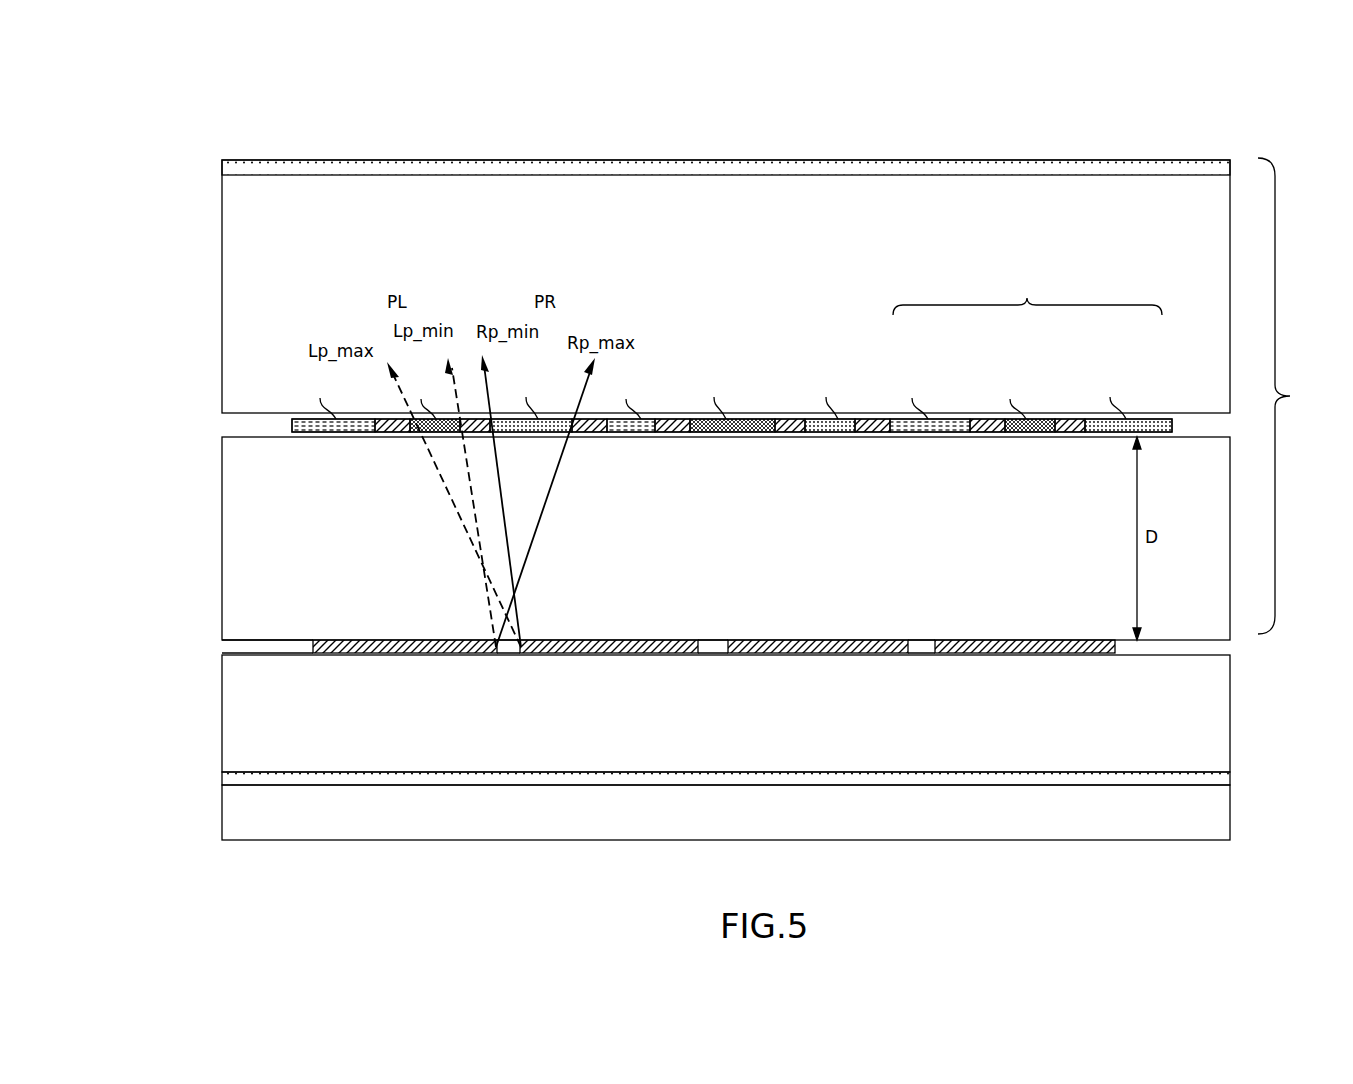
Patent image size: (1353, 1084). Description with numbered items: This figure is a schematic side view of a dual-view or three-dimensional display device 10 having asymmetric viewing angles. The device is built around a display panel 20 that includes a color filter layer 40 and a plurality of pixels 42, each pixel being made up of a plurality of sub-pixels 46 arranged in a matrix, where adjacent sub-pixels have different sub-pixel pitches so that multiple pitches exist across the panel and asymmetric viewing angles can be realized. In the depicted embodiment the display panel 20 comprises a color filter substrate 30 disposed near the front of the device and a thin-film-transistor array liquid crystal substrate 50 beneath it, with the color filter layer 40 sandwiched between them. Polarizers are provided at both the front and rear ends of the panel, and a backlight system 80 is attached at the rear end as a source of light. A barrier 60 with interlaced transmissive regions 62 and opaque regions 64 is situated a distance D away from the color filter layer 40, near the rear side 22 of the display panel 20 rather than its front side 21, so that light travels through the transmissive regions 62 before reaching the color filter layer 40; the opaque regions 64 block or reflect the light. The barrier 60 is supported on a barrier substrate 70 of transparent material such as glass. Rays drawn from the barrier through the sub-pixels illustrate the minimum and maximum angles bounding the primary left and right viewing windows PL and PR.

The dual-view/3D display device 10 is at (127, 111).
The display panel 20 is at (741, 404).
The front side 21 is at (721, 262).
The rear side 22 is at (721, 566).
The color filter substrate 30 is at (222, 299).
The color filter layer 40 is at (665, 392).
The pixels 42 is at (1027, 291).
The sub-pixels 46 is at (1128, 392).
The thin-film-transistor array liquid crystal substrate 50 is at (222, 535).
The barrier 60 is at (636, 662).
The transmissive regions 62 is at (505, 654).
The opaque regions 64 is at (402, 654).
The barrier substrate 70 is at (222, 712).
The backlight system 80 is at (222, 817).